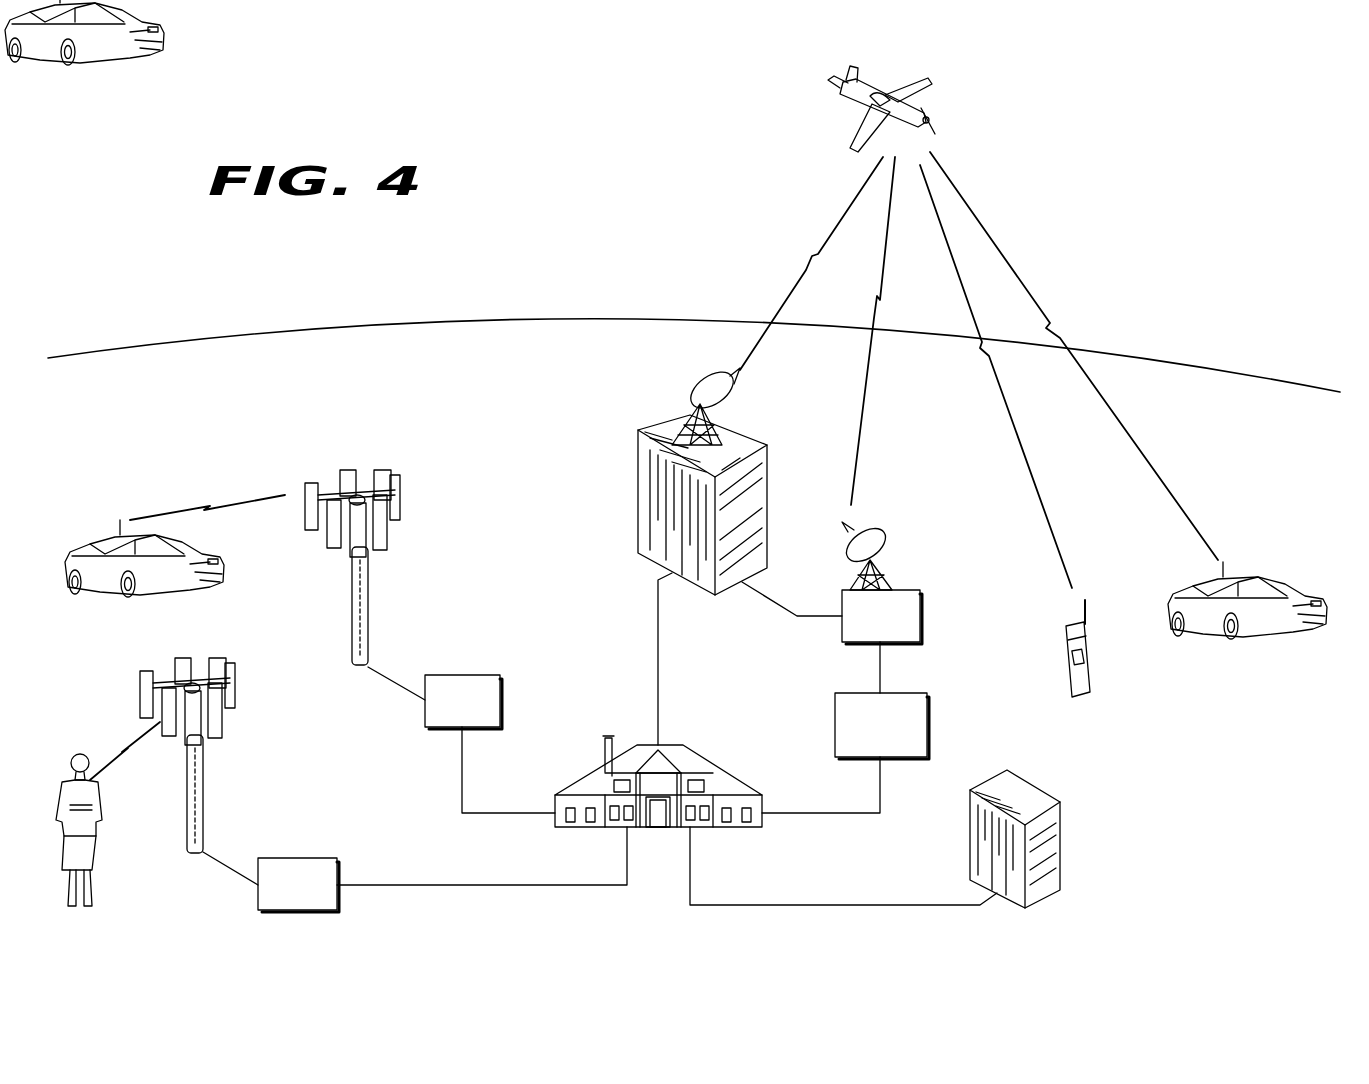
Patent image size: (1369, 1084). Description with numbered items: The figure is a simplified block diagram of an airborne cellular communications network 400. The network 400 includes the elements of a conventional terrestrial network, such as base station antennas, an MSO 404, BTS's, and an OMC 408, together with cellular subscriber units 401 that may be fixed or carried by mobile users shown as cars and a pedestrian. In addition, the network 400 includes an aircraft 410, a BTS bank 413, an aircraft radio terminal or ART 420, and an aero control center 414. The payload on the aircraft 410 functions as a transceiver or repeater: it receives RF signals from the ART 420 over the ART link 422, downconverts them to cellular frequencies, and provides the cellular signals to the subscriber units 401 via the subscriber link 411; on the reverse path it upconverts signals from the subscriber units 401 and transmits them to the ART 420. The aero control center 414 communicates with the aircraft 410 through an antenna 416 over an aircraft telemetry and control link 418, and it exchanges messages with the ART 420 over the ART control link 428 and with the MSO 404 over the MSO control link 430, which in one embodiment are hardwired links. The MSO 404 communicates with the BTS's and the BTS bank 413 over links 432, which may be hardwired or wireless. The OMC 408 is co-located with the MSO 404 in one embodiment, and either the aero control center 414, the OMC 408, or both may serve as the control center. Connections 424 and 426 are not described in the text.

The airborne cellular communications network 400 is at (333, 252).
The cellular subscriber unit 401 is at (1062, 677).
The MSO 404 is at (726, 768).
The OMC 408 is at (1040, 782).
The aircraft 410 is at (862, 136).
The subscriber link 411 is at (995, 232).
The BTS bank 413 is at (930, 726).
The aero control center 414 is at (640, 497).
The antenna 416 is at (688, 383).
The aircraft telemetry and control link 418 is at (790, 288).
The aircraft radio terminal (ART) 420 is at (925, 620).
The ART link 422 is at (860, 386).
The connection line 424 is at (885, 666).
The connection line 426 is at (392, 688).
The ART control link 428 is at (772, 604).
The MSO control link 430 is at (662, 664).
The link 432 is at (460, 770).